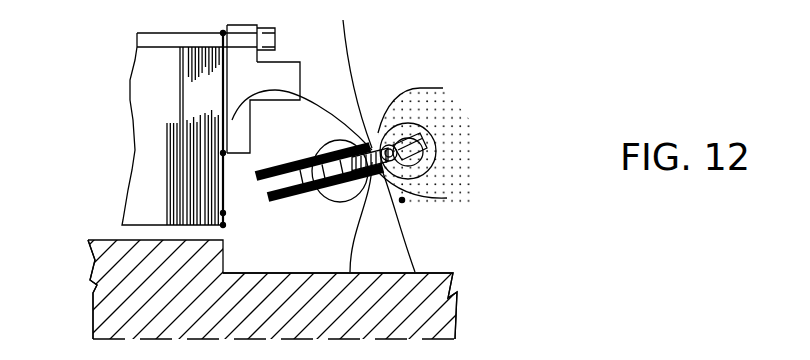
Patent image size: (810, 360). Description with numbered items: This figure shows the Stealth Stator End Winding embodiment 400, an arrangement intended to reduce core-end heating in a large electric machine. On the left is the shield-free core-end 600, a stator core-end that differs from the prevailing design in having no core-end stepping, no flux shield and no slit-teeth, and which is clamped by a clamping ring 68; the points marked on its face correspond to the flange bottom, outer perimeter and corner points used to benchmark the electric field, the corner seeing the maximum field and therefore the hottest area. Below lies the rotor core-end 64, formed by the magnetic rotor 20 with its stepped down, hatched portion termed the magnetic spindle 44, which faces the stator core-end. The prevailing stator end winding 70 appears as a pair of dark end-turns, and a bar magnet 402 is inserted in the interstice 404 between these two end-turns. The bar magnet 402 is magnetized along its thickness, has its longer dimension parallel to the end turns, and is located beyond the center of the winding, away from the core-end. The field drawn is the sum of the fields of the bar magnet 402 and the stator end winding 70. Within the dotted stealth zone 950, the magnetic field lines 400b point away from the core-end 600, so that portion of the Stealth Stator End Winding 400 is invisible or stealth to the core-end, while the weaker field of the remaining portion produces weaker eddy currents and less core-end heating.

The magnetic rotor 20 is at (110, 240).
The magnetic spindle 44 is at (442, 273).
The rotor core-end 64 is at (78, 276).
The clamping ring 68 is at (248, 132).
The prevailing stator end winding 70 is at (268, 202).
The Stealth Stator End Winding embodiment 400 is at (486, 103).
The magnetic field lines 400b is at (408, 90).
The bar magnet 402 is at (425, 150).
The interstice 404 is at (422, 142).
The shield-free core-end 600 is at (118, 149).
The stealth zone 950 is at (404, 202).